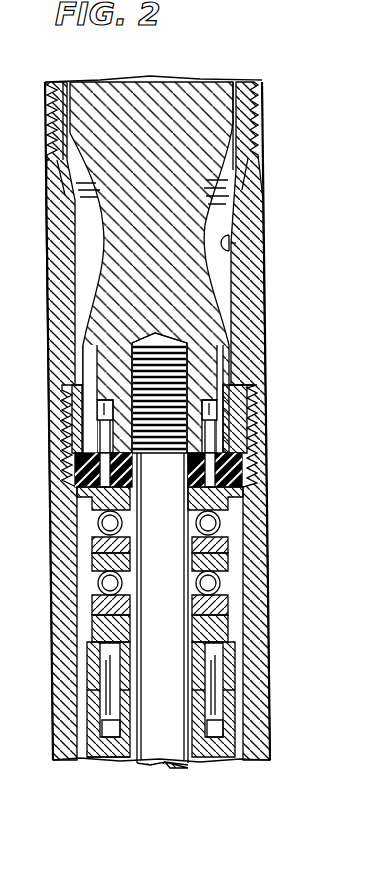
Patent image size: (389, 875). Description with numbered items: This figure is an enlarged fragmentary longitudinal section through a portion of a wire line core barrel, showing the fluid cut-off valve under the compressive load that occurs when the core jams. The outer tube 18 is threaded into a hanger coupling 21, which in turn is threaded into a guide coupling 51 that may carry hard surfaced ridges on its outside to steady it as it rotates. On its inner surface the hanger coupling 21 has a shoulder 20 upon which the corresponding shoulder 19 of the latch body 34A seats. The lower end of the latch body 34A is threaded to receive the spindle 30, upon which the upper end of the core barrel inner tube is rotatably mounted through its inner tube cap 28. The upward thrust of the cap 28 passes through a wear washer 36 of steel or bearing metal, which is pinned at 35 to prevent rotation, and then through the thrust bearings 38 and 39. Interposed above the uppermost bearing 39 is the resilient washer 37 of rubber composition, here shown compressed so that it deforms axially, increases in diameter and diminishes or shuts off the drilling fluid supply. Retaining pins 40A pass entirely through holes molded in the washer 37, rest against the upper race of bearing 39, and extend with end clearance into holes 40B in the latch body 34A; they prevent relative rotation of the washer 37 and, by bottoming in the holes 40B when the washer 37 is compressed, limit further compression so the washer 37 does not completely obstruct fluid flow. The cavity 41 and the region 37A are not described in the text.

The outer tube 18 is at (265, 738).
The shoulder 19 is at (229, 258).
The shoulder 20 is at (245, 232).
The hanger coupling 21 is at (258, 319).
The inner tube cap 28 is at (100, 758).
The spindle 30 is at (150, 752).
The latch body 34A is at (218, 122).
The pin 35 is at (215, 672).
The wear washer 36 is at (87, 655).
The resilient washer 37 is at (88, 469).
The seal ring 37A is at (232, 477).
The thrust bearing 38 is at (92, 597).
The thrust bearing 39 is at (92, 535).
The retaining pins 40A is at (210, 432).
The holes 40B is at (72, 413).
The cavity 41 is at (222, 206).
The guide coupling 51 is at (45, 110).